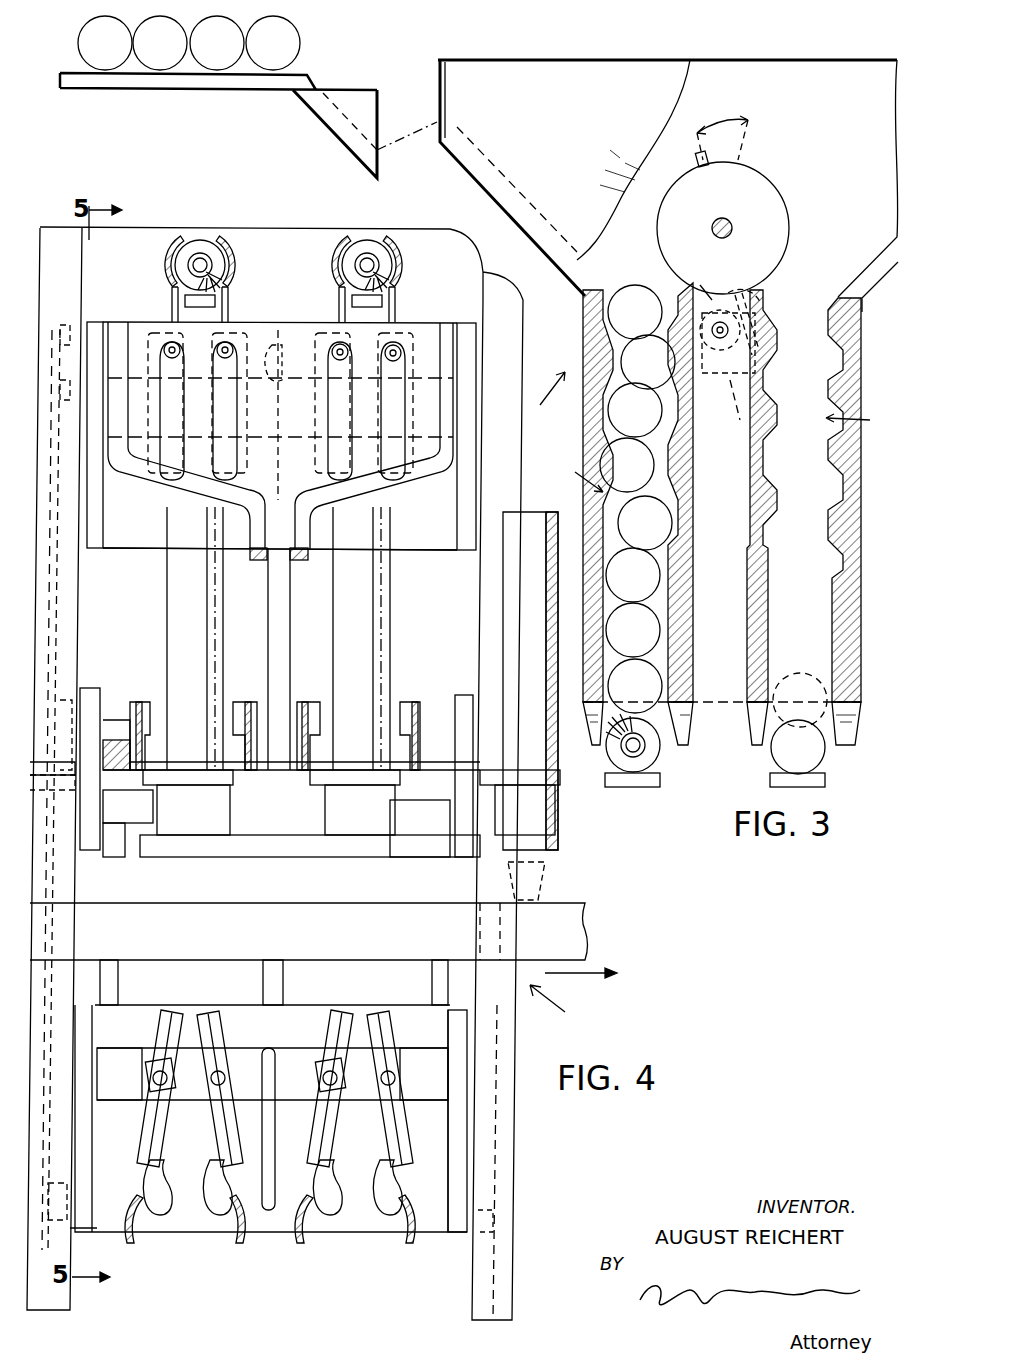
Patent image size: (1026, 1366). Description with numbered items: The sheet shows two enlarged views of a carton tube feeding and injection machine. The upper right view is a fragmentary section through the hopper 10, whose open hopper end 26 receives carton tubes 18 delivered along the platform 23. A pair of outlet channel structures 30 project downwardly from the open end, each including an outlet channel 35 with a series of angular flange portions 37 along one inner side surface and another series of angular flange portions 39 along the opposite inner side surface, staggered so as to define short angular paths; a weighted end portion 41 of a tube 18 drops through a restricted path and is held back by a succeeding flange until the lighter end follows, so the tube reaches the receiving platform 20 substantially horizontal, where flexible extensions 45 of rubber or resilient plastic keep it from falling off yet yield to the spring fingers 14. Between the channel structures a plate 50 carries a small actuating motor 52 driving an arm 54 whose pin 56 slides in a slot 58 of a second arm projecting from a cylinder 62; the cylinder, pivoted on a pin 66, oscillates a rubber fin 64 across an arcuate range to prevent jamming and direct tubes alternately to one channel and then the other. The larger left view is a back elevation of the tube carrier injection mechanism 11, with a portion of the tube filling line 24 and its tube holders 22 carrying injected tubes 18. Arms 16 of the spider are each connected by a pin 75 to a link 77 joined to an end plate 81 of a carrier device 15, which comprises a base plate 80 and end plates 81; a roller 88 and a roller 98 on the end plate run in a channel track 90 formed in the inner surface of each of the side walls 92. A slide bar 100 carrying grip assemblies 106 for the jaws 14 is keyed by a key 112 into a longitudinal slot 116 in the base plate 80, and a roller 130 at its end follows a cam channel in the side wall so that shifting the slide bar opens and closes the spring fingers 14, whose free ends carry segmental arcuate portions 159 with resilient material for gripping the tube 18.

In FIG. 3, the hopper 10 is at (556, 389).
In FIG. 4, the tube carrier injection mechanism 11 is at (561, 1010).
In FIG. 4, the spring fingers 14 is at (172, 300).
In FIG. 4, the carrier device 15 is at (136, 557).
In FIG. 4, the arms 16 is at (290, 590).
In FIG. 4, the carton tube 18 is at (258, 72).
In FIG. 3, the carton tube 18 is at (632, 283).
In FIG. 3, the receiving platform 20 is at (660, 785).
In FIG. 4, the tube holder 22 is at (310, 805).
In FIG. 4, the platform 23 is at (160, 90).
In FIG. 4, the tube filling line 24 is at (602, 932).
In FIG. 3, the open hopper end 26 is at (727, 45).
In FIG. 3, the outlet channel structures 30 is at (592, 325).
In FIG. 3, the outlet channel 35 is at (726, 452).
In FIG. 3, the angular flange portions 37 is at (820, 480).
In FIG. 3, the angular flange portions 39 is at (790, 512).
In FIG. 4, the weighted end portion 41 is at (560, 862).
In FIG. 3, the flexible extensions 45 is at (590, 722).
In FIG. 3, the plate 50 is at (723, 360).
In FIG. 3, the actuating motor 52 is at (729, 417).
In FIG. 3, the arm 54 is at (693, 278).
In FIG. 3, the pin 56 is at (762, 314).
In FIG. 3, the slot 58 is at (746, 279).
In FIG. 3, the cylinder 62 is at (786, 215).
In FIG. 3, the fin 64 is at (697, 158).
In FIG. 3, the pin 66 is at (748, 218).
In FIG. 4, the pin 75 is at (300, 551).
In FIG. 4, the link 77 is at (118, 470).
In FIG. 4, the base plate 80 is at (405, 549).
In FIG. 4, the end plates 81 is at (95, 548).
In FIG. 4, the roller 88 is at (93, 890).
In FIG. 4, the channel track 90 is at (60, 650).
In FIG. 4, the side walls 92 is at (60, 240).
In FIG. 4, the roller 98 is at (75, 690).
In FIG. 4, the slide bar 100 is at (420, 857).
In FIG. 4, the grip assemblies 106 is at (330, 1090).
In FIG. 4, the key 112 is at (301, 350).
In FIG. 4, the longitudinal slot 116 is at (278, 345).
In FIG. 4, the roller 130 is at (65, 400).
In FIG. 4, the segmental arcuate portion 159 is at (170, 252).